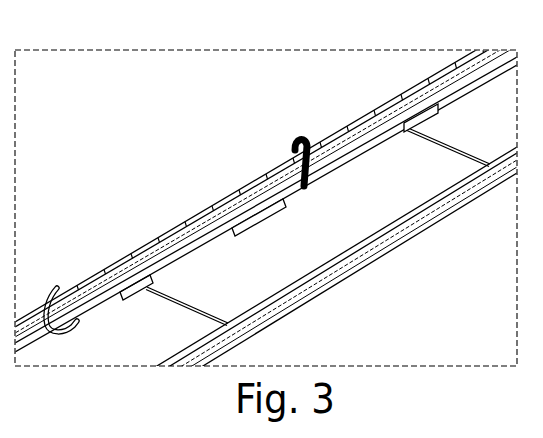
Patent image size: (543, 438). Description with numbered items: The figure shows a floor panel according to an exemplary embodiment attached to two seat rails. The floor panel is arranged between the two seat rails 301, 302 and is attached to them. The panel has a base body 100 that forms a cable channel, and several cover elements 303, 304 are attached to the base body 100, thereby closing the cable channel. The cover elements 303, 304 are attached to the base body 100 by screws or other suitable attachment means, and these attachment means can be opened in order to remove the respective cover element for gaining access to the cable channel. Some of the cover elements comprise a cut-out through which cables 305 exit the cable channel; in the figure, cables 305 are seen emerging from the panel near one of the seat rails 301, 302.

The base body 100 is at (418, 197).
The seat rail 301 is at (449, 66).
The seat rail 302 is at (232, 349).
The cover element 303 is at (247, 218).
The cover element 304 is at (290, 193).
The cables 305 is at (284, 160).